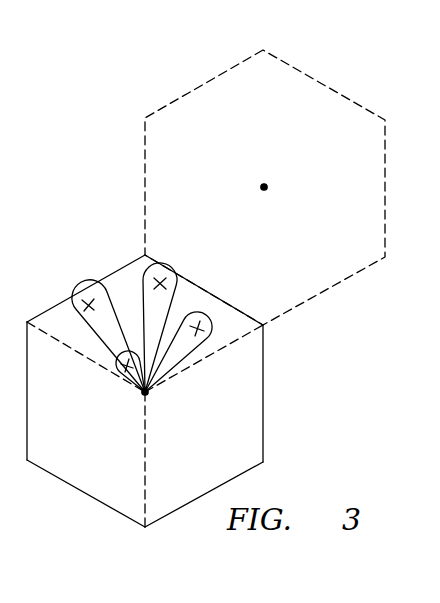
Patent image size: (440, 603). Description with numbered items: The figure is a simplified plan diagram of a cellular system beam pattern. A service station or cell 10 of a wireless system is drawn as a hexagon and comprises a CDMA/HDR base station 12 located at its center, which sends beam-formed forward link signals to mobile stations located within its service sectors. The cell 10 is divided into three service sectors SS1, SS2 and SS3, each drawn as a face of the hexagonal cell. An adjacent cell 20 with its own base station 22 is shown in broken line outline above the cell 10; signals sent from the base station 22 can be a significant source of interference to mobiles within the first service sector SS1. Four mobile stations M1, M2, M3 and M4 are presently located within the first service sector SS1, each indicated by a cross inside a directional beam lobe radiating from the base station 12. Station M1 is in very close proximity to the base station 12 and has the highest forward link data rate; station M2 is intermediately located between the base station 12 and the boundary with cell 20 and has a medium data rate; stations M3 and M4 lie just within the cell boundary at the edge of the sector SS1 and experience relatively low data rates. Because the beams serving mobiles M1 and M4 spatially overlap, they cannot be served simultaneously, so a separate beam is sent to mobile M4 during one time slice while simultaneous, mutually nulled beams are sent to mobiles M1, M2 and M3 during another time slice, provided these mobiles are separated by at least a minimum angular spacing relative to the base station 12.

The cell 10 is at (184, 375).
The base station 12 is at (152, 397).
The adjacent cell 20 is at (124, 179).
The base station 22 is at (261, 183).
The first service sector SS1 is at (125, 282).
The second service sector SS2 is at (258, 381).
The third service sector SS3 is at (75, 478).
The mobile station M1 is at (117, 371).
The mobile station M2 is at (200, 315).
The mobile station M3 is at (162, 272).
The mobile station M4 is at (84, 299).